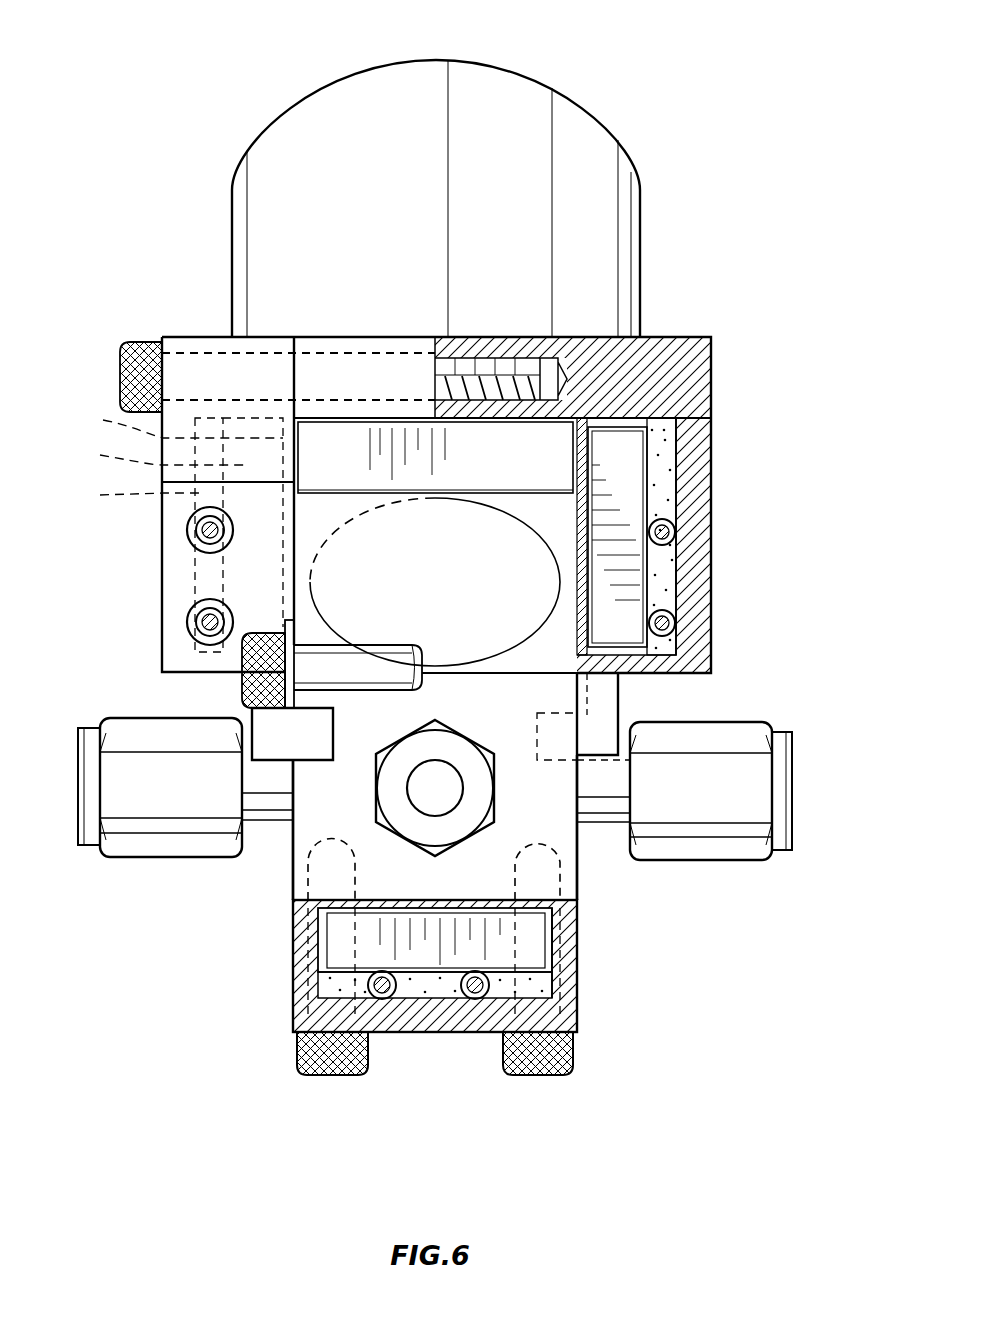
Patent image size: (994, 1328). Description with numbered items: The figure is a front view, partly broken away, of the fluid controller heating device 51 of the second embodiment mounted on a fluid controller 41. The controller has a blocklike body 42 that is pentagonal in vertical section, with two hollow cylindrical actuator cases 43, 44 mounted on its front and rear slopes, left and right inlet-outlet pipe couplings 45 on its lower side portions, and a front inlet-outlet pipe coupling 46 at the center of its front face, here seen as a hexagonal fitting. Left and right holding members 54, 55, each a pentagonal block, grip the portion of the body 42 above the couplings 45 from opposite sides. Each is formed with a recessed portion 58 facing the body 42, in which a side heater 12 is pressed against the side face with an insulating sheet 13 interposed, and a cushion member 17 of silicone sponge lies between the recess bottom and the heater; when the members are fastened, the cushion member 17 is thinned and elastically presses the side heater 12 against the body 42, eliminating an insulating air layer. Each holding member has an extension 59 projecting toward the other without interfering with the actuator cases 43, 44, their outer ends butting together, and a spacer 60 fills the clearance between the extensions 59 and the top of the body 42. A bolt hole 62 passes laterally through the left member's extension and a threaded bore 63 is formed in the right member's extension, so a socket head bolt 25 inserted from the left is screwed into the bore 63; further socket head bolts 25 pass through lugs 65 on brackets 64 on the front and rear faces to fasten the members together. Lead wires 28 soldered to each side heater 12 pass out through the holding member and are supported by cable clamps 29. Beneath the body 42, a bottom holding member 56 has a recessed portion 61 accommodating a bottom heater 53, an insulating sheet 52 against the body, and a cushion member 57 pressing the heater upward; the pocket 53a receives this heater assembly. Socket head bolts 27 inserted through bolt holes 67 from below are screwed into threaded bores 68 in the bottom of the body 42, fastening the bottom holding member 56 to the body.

The fluid controller 41 is at (614, 120).
The actuator case 44 is at (258, 165).
The fluid controller heating device 51 is at (746, 276).
The left holding member 54 is at (181, 333).
The right holding member 55 is at (718, 347).
The recessed portion 58 is at (713, 390).
The bolt hole 62 is at (198, 345).
The extension 59 is at (348, 372).
The spacer 60 is at (405, 440).
The threaded bore 63 is at (503, 362).
The insulating sheet 13 is at (612, 388).
The side heater 12 is at (676, 470).
The cushion member 17 is at (790, 522).
The actuator case 43 is at (620, 452).
The socket head bolt 25 is at (140, 368).
The cable clamp 29 is at (198, 530).
The lead wire 28 is at (200, 622).
The lug 65 is at (300, 640).
The bracket 64 is at (253, 728).
The front inlet-outlet pipe coupling 46 is at (480, 790).
The inlet-outlet pipe coupling 45 is at (172, 815).
The body 42 is at (579, 897).
The threaded bore 68 is at (579, 862).
The insulating sheet 52 is at (310, 912).
The recess 53a is at (340, 958).
The bottom heater 53 is at (330, 990).
The recessed portion 61 is at (564, 950).
The cushion member 57 is at (316, 1005).
The bolt hole 67 is at (579, 1013).
The socket head bolt 27 is at (318, 1050).
The bottom holding member 56 is at (392, 1030).